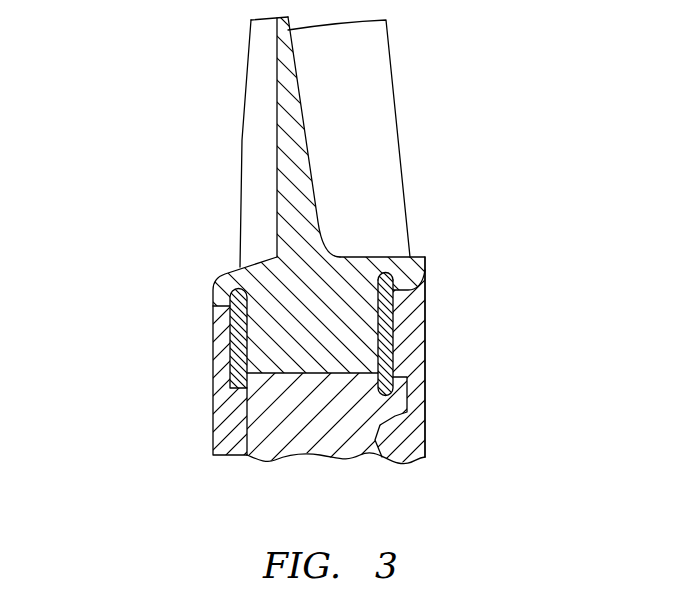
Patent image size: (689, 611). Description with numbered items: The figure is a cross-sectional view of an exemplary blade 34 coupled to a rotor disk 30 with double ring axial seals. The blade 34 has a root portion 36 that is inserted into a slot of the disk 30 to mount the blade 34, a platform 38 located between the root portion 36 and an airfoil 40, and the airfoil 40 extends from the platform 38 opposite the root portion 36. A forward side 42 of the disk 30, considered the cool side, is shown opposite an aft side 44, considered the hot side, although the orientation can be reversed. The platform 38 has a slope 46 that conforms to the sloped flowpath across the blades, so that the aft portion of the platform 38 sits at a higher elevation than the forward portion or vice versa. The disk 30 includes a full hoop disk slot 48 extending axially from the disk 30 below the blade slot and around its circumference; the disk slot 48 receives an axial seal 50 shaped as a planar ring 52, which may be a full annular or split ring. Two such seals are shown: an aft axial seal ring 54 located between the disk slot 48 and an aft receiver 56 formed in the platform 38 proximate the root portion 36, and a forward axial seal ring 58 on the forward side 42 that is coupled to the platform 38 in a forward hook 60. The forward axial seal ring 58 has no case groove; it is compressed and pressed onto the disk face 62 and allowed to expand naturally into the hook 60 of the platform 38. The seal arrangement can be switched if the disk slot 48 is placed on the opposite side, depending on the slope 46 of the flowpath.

The rotor disk 30 is at (327, 413).
The blade 34 is at (226, 37).
The root portion 36 is at (327, 324).
The platform 38 is at (237, 268).
The airfoil 40 is at (240, 118).
The forward side 42 is at (82, 443).
The aft side 44 is at (563, 378).
The slope 46 is at (470, 231).
The disk slot 48 is at (410, 414).
The axial seal 50 is at (432, 323).
The planar ring 52 is at (412, 312).
The aft axial seal ring 54 is at (398, 384).
The aft receiver 56 is at (387, 270).
The forward axial seal ring 58 is at (229, 347).
The forward hook 60 is at (237, 268).
The disk face 62 is at (247, 432).